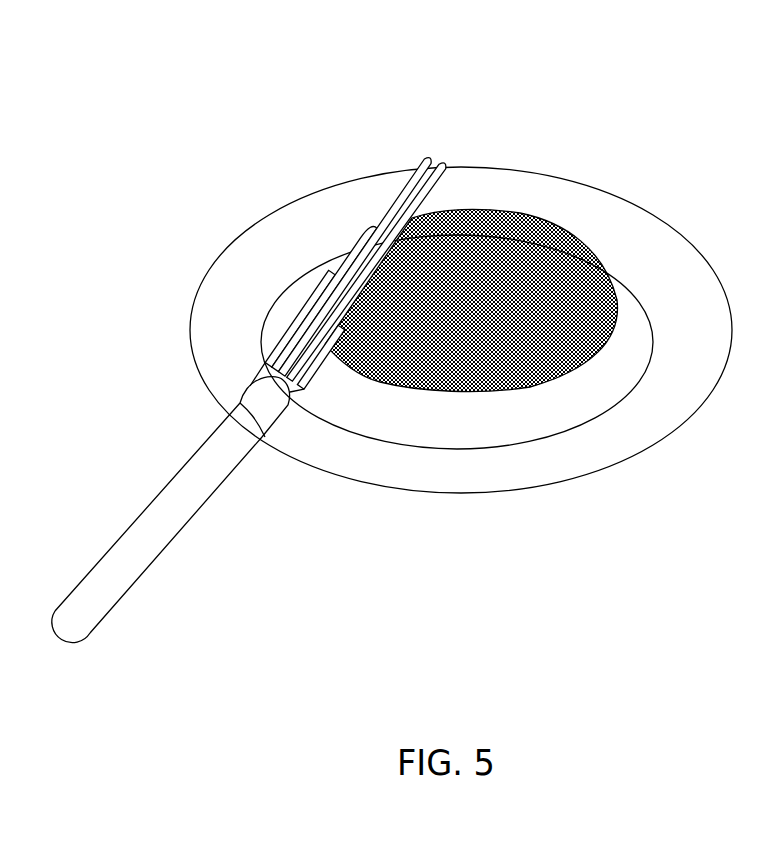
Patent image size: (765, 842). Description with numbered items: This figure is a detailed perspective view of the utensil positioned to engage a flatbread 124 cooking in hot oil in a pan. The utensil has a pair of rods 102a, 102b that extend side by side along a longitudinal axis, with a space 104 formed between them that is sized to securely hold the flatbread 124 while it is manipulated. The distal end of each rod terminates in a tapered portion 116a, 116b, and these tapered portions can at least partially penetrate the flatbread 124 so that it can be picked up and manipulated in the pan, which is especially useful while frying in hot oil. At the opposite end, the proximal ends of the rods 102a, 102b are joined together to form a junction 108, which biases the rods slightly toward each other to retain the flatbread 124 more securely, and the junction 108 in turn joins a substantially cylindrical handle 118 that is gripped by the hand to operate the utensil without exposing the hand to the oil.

The space 104 is at (448, 186).
The rod 102a is at (303, 312).
The rod 102b is at (317, 372).
The flatbread 124 is at (353, 233).
The tapered portion 116a is at (432, 159).
The tapered portion 116b is at (447, 165).
The junction 108 is at (268, 370).
The handle 118 is at (163, 480).